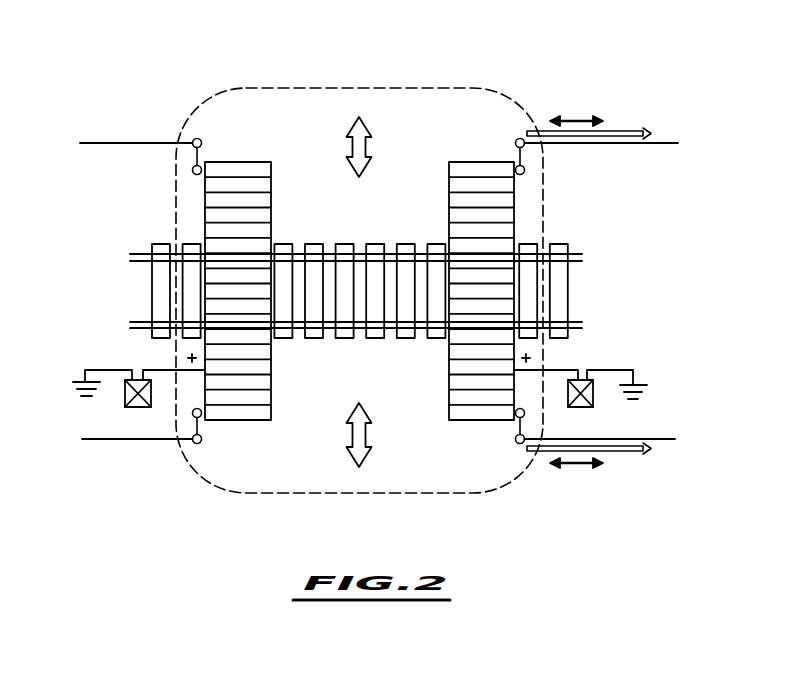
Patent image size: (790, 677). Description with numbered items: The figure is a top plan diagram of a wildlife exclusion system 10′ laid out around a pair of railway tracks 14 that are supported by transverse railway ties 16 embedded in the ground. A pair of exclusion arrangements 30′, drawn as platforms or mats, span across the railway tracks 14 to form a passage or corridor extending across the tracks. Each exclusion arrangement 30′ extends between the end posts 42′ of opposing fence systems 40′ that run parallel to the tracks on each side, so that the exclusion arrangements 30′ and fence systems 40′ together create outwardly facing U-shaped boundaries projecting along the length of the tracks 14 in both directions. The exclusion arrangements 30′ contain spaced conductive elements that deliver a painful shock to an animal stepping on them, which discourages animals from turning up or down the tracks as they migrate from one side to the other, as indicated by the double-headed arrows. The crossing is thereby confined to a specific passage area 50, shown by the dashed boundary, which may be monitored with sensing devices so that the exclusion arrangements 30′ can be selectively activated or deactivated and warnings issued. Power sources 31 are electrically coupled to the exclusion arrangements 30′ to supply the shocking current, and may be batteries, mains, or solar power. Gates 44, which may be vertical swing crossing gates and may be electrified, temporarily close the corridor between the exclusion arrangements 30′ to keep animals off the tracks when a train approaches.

The wildlife exclusion system 10′ is at (470, 70).
The passage area 50 is at (470, 493).
The railway tracks 14 is at (581, 254).
The railway ties 16 is at (318, 243).
The exclusion arrangements 30′ is at (278, 184).
The end posts 42′ is at (201, 140).
The fence systems 40′ is at (137, 110).
The gates 44 is at (627, 131).
The power source 31 is at (125, 402).